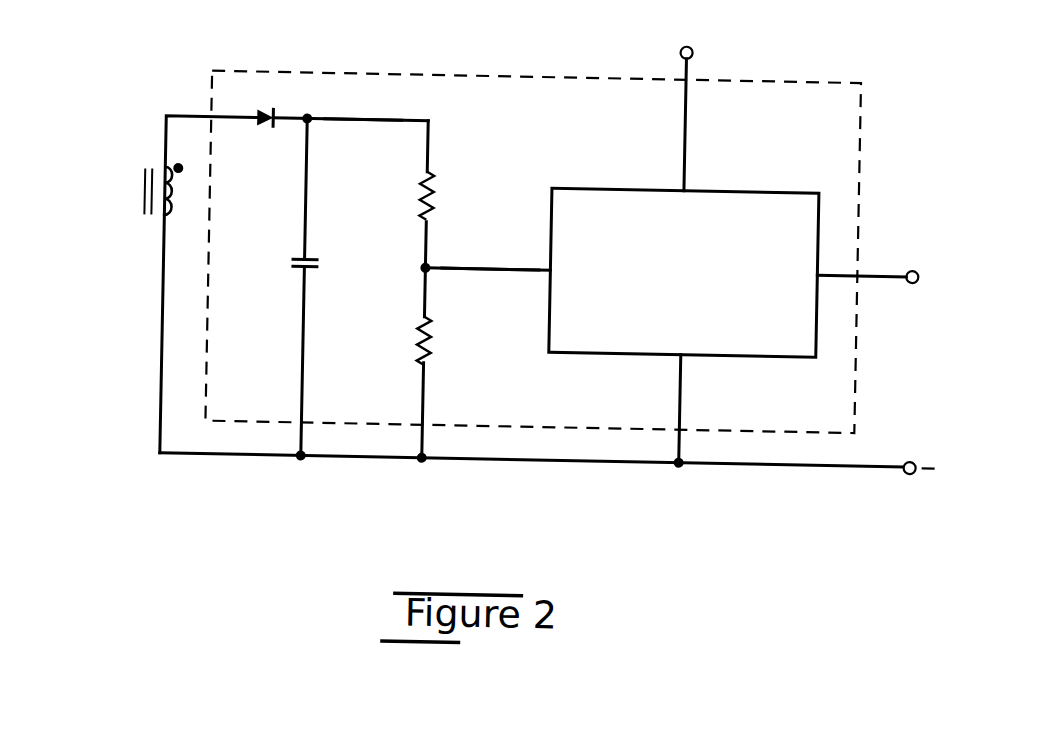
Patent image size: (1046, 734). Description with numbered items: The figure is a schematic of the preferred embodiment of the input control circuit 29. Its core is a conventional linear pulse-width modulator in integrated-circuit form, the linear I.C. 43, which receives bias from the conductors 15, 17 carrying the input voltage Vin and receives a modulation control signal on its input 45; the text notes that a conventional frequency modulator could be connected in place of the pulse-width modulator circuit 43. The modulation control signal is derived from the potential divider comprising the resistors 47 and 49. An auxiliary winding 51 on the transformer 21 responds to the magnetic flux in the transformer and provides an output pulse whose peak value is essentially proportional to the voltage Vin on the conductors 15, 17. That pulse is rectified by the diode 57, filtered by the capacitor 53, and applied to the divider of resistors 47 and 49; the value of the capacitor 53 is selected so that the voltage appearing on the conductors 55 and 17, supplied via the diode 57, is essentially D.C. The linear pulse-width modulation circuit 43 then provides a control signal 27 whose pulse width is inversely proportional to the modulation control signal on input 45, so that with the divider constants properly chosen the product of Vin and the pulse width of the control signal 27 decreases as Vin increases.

The conductor 15 is at (688, 50).
The conductor 17 is at (880, 461).
The transformer 21 is at (148, 222).
The control signal 27 is at (883, 270).
The control circuit 29 is at (857, 77).
The linear pulse-width modulator integrated circuit 43 is at (636, 188).
The input 45 is at (452, 270).
The resistor 47 is at (427, 172).
The resistor 49 is at (425, 370).
The auxiliary winding 51 is at (170, 222).
The capacitor 53 is at (318, 269).
The conductor 55 is at (353, 123).
The diode 57 is at (262, 123).